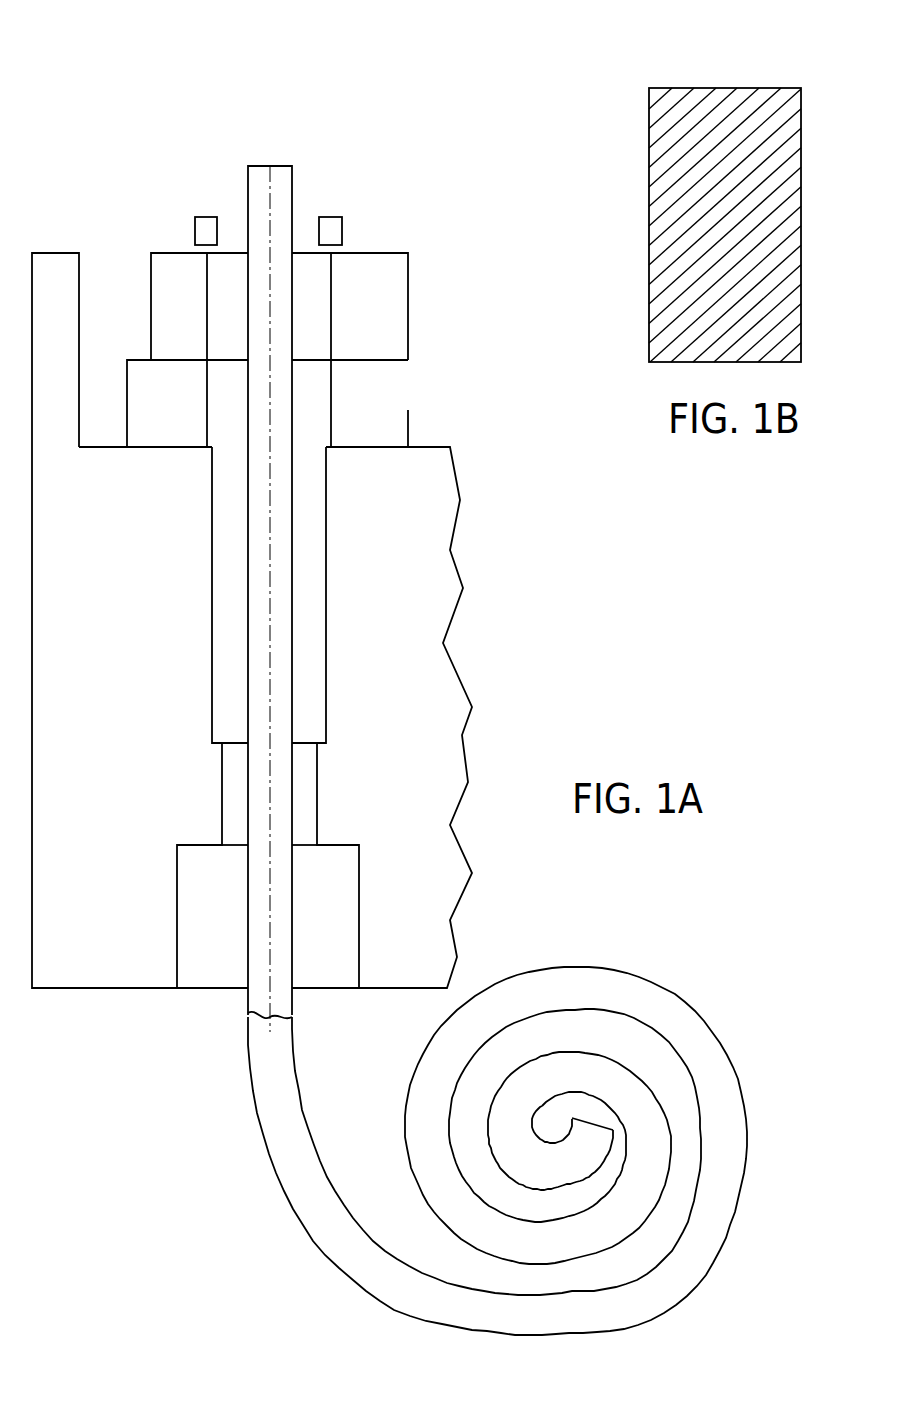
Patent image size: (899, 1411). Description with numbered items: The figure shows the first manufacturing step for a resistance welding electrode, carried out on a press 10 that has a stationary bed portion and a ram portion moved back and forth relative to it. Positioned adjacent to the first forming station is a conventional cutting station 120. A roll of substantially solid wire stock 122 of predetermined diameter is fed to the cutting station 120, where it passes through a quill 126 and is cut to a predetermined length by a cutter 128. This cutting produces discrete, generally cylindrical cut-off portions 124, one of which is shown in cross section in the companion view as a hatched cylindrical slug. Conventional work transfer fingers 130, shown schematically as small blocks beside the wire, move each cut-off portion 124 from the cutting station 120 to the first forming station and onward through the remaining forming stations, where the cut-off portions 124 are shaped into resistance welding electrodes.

In FIG. 1A, the press 10 is at (425, 699).
In FIG. 1A, the cutting station 120 is at (440, 462).
In FIG. 1A, the wire stock 122 is at (700, 1027).
In FIG. 1A, the cut-off portion 124 is at (256, 176).
In FIG. 1B, the cut-off portion 124 is at (737, 92).
In FIG. 1A, the quill 126 is at (322, 395).
In FIG. 1A, the cutter 128 is at (323, 300).
In FIG. 1A, the work transfer fingers 130 is at (196, 232).